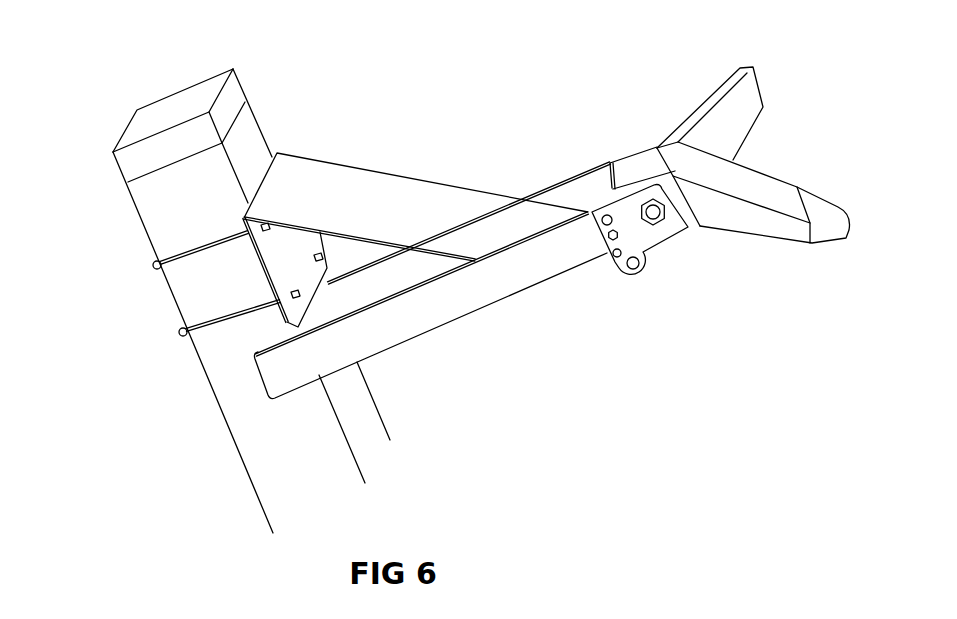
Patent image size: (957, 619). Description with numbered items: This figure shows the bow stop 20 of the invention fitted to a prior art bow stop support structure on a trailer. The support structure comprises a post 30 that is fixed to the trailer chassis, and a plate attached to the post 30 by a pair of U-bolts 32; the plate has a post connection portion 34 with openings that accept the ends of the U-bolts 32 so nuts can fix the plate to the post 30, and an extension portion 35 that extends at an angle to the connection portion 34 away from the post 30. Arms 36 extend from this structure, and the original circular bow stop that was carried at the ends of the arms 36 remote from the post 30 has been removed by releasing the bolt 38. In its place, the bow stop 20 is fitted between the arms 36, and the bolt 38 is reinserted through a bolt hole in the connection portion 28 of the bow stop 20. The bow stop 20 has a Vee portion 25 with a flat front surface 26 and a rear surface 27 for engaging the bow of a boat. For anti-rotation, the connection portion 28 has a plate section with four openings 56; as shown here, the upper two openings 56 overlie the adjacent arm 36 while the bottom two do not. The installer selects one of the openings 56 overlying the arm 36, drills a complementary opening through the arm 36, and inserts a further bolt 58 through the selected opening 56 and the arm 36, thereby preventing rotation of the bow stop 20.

The bow stop 20 is at (659, 100).
The Vee portion 25 is at (737, 127).
The flat front surface 26 is at (738, 98).
The rear surface 27 is at (750, 218).
The connection portion 28 is at (622, 173).
The post 30 is at (160, 208).
The U-bolts 32 is at (150, 265).
The post connection portion 34 is at (286, 250).
The extension portion 35 is at (332, 182).
The arms 36 is at (582, 182).
The bolt 38 is at (655, 222).
The openings 56 is at (587, 212).
The bolt 58 is at (593, 242).